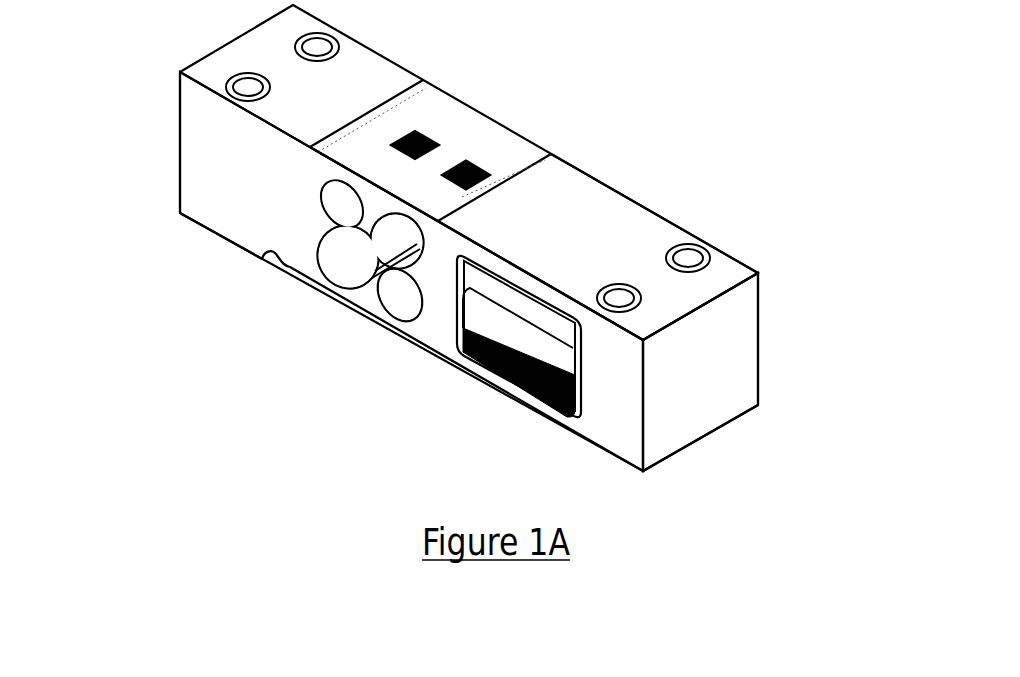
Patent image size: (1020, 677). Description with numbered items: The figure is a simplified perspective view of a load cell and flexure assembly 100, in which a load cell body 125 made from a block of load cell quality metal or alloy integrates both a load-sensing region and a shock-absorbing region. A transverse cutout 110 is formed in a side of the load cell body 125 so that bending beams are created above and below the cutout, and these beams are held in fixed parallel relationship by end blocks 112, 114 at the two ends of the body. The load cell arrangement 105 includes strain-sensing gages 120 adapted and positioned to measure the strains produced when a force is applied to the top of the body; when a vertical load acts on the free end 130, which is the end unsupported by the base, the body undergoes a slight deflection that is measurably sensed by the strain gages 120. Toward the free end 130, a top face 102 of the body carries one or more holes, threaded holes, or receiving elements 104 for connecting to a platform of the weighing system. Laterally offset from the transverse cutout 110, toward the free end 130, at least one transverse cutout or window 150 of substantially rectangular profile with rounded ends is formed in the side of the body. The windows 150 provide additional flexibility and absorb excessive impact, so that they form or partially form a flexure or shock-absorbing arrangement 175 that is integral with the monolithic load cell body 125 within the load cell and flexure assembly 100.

The load cell and flexure assembly 100 is at (100, 402).
The top face 102 is at (631, 219).
The receiving element 104 is at (690, 259).
The load cell arrangement 105 is at (301, 332).
The transverse cutout 110 is at (362, 252).
The end block 112 is at (242, 203).
The end block 114 is at (442, 317).
The strain-sensing gages 120 is at (478, 165).
The load cell body 125 is at (604, 93).
The free end 130 is at (712, 352).
The window 150 is at (524, 294).
The flexure or shock-absorbing arrangement 175 is at (610, 376).